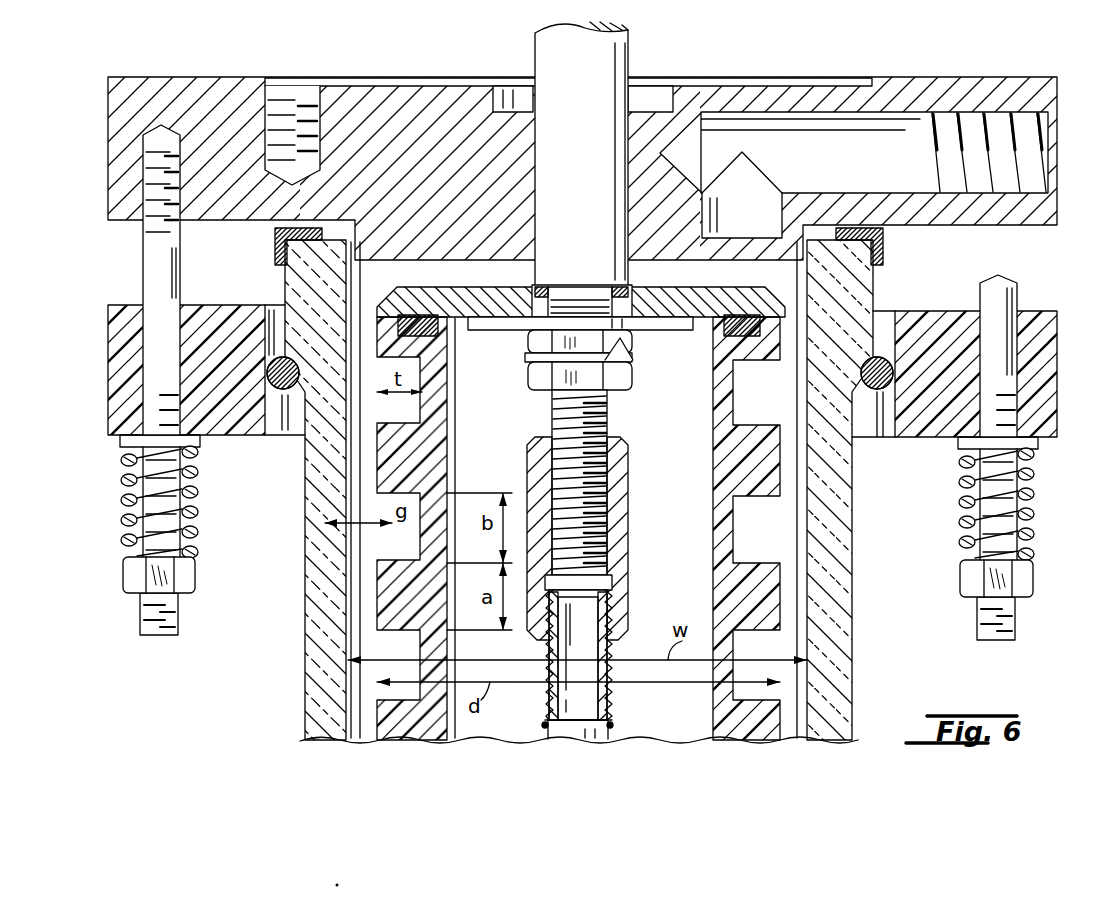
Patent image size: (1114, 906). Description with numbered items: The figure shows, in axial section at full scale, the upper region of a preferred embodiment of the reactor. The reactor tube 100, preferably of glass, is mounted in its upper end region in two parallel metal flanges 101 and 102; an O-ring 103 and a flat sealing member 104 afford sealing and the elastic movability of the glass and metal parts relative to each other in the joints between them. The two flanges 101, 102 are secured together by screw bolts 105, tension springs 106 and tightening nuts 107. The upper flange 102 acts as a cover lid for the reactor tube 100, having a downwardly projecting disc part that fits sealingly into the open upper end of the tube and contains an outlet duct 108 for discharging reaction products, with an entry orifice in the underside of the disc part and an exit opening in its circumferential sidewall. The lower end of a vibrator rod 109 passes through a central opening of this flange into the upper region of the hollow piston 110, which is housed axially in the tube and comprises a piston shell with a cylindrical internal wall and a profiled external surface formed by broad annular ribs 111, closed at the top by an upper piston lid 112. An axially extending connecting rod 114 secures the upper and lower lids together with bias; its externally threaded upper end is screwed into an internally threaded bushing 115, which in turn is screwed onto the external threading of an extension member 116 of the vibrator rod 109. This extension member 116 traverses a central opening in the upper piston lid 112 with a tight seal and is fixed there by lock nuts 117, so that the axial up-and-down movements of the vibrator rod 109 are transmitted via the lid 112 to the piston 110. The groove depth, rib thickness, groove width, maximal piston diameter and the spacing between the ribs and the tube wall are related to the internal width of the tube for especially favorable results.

The reactor tube 100 is at (833, 548).
The flange 101 is at (908, 422).
The upper flange 102 is at (430, 95).
The O-ring 103 is at (285, 398).
The flat sealing member 104 is at (884, 261).
The screw bolts 105 is at (150, 268).
The tension springs 106 is at (198, 513).
The tightening nuts 107 is at (190, 578).
The outlet duct 108 is at (1033, 133).
The vibrator rod 109 is at (612, 54).
The hollow piston 110 is at (778, 646).
The annular ribs 111 is at (752, 496).
The upper piston lid 112 is at (670, 330).
The connecting rod 114 is at (606, 722).
The bushing 115 is at (620, 470).
The extension member 116 is at (600, 418).
The lock nuts 117 is at (535, 376).